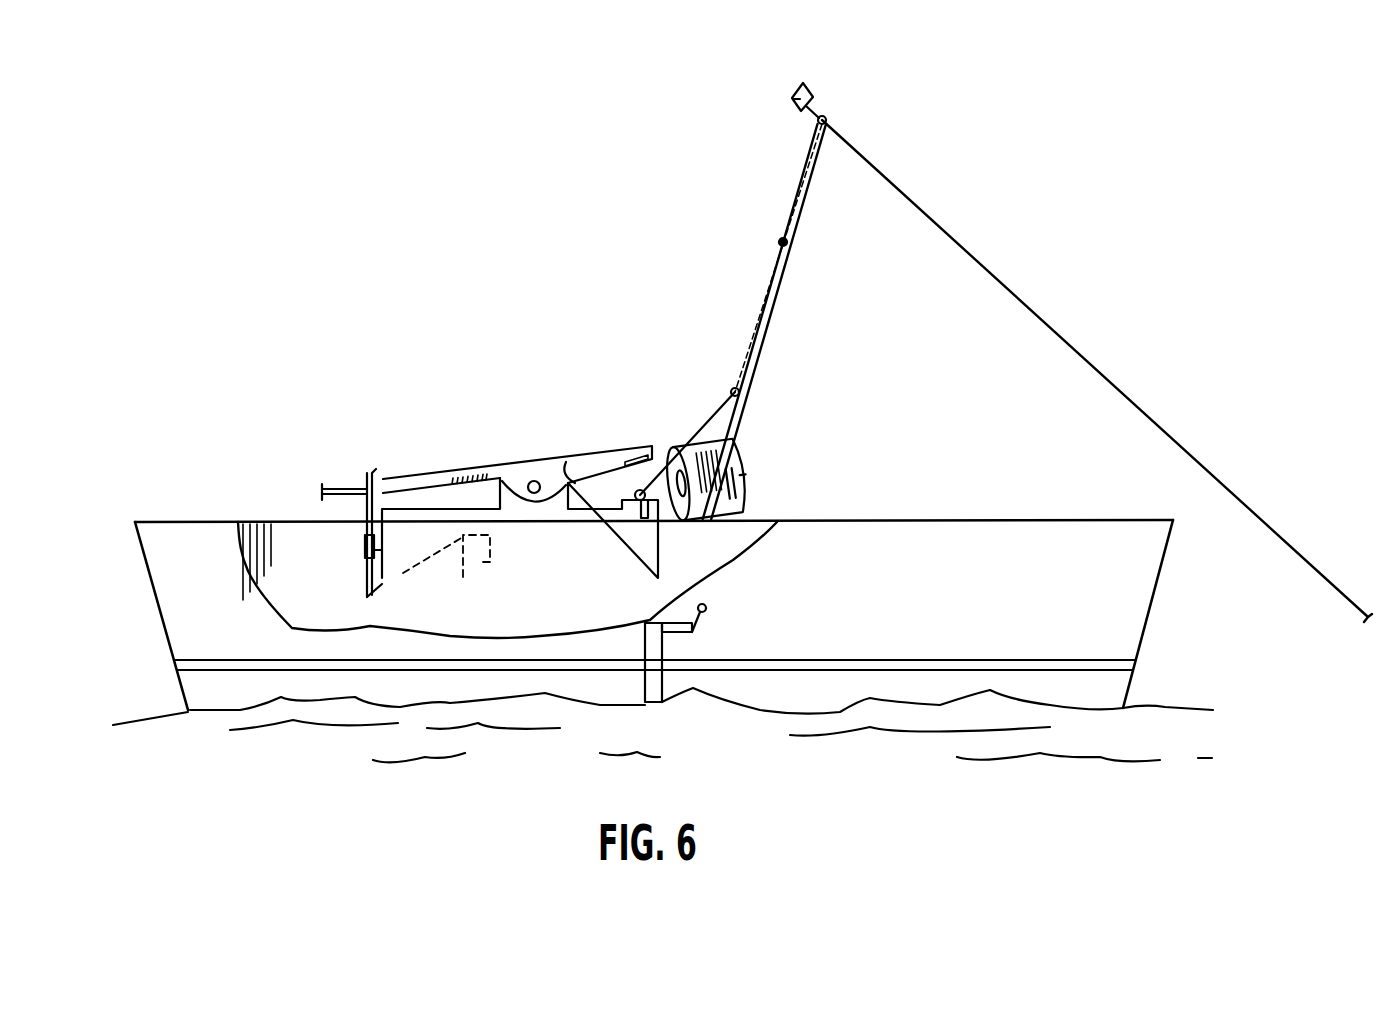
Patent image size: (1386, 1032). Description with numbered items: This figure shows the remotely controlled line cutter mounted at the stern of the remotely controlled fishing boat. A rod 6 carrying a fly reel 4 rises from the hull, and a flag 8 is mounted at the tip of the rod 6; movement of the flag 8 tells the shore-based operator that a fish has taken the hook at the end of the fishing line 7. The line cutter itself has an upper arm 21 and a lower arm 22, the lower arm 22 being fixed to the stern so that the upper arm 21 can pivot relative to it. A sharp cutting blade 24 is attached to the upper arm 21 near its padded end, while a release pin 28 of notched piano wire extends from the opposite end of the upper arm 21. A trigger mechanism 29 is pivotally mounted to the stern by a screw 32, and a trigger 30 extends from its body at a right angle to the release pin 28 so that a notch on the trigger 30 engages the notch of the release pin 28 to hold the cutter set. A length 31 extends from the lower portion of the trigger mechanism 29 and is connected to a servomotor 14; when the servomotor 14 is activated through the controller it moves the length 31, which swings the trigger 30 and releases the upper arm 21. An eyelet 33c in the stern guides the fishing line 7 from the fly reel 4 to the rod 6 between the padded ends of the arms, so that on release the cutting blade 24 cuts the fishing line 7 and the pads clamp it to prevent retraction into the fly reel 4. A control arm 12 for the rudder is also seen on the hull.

The fly reel 4 is at (747, 477).
The rod 6 is at (790, 217).
The fishing line 7 is at (708, 420).
The flag 8 is at (792, 98).
The control arm 12 is at (692, 632).
The servomotor 14 is at (503, 563).
The upper arm 21 is at (522, 467).
The lower arm 22 is at (560, 513).
The cutting blade 24 is at (590, 472).
The release pin 28 is at (348, 490).
The trigger mechanism 29 is at (364, 548).
The trigger 30 is at (367, 509).
The length 31 is at (363, 581).
The screw 32 is at (373, 550).
The eyelet 33c is at (652, 500).